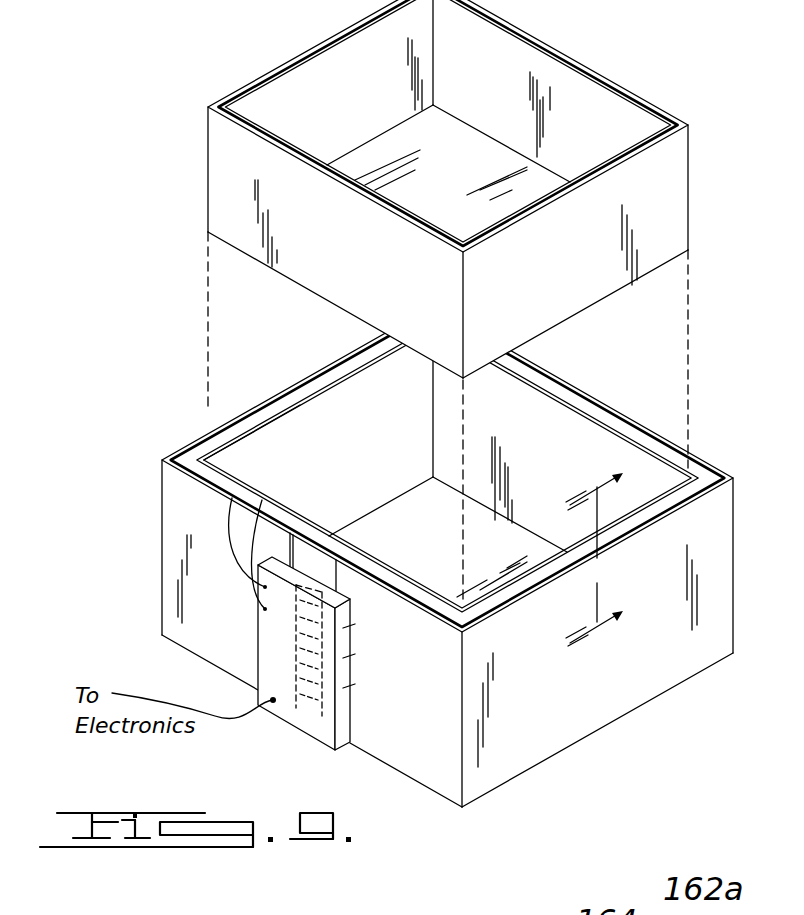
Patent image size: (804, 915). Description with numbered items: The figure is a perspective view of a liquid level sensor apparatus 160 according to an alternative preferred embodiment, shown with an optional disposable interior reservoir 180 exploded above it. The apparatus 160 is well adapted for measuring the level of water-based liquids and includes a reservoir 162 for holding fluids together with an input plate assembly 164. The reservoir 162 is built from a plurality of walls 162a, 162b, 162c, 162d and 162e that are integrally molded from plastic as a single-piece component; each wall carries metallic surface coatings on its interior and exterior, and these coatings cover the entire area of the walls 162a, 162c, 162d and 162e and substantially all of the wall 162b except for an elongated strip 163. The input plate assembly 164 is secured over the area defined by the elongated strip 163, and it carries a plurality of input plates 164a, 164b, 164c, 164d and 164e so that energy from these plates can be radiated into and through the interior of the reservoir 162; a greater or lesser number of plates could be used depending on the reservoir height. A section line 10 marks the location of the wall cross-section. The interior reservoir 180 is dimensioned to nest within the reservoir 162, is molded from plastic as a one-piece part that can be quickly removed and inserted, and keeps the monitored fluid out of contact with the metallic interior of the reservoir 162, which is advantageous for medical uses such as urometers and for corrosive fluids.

The section line 10- 10 is at (591, 562).
The liquid level sensor apparatus 160 is at (150, 275).
The reservoir 162 is at (399, 556).
The wall 162a is at (552, 737).
The wall 162b is at (168, 537).
The wall 162c is at (543, 405).
The wall 162d is at (297, 424).
The wall 162e is at (384, 520).
The elongated strip 163 is at (318, 553).
The input plate assembly 164 is at (266, 646).
The input plate 164a is at (338, 600).
The input plate 164b is at (336, 631).
The input plate 164c is at (336, 662).
The input plate 164d is at (336, 692).
The input plate 164e is at (300, 708).
The interior reservoir 180 is at (220, 70).